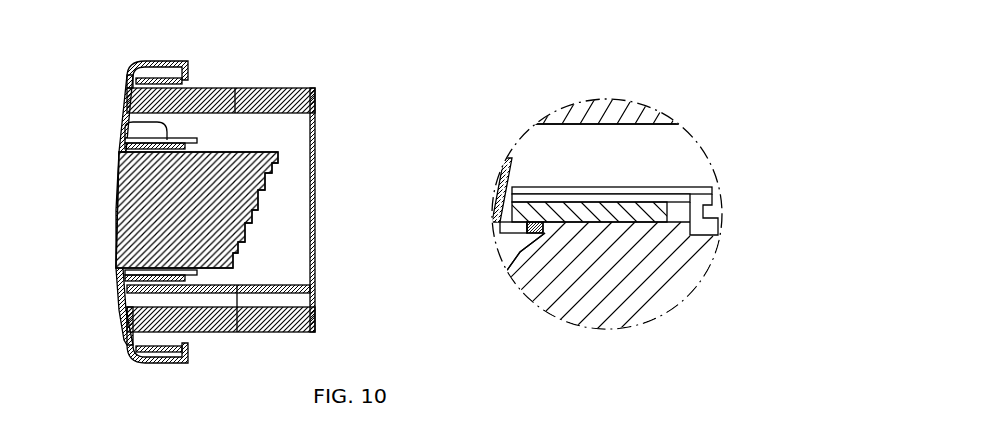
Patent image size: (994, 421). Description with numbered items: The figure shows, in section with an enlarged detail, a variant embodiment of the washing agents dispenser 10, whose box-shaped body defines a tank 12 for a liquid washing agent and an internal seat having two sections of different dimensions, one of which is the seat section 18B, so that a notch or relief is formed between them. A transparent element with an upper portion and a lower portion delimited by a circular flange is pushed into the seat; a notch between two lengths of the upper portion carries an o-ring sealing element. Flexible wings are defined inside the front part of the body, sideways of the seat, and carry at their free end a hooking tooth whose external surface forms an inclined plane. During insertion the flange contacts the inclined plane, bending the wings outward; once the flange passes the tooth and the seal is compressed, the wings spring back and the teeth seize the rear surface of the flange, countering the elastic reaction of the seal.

The washing agents dispenser 10 is at (352, 78).
The tank 12 is at (300, 262).
The seat section 18B is at (604, 212).